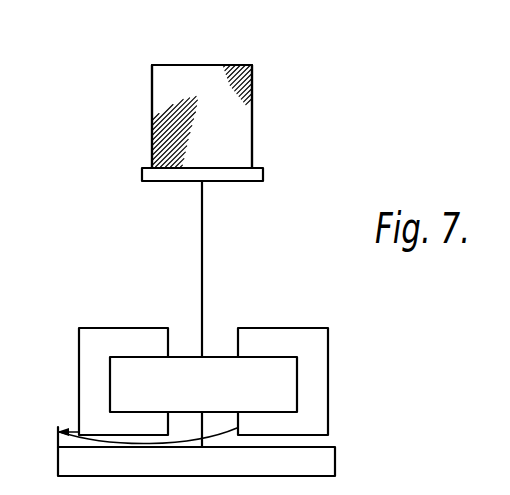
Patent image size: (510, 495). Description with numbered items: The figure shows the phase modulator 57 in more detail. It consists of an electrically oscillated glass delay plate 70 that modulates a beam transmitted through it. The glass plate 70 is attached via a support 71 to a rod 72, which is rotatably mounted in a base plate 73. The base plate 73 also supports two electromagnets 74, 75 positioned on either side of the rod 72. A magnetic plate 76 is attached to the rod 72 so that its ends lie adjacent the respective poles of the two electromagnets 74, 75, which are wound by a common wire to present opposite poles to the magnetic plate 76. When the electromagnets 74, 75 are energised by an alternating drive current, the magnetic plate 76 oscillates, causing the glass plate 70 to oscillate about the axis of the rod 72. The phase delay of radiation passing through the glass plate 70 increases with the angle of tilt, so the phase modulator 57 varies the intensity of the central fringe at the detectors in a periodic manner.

The phase modulator 57 is at (259, 82).
The glass delay plate 70 is at (203, 68).
The support 71 is at (264, 174).
The rod 72 is at (203, 258).
The base plate 73 is at (336, 465).
The electromagnet 74 is at (83, 378).
The electromagnet 75 is at (318, 372).
The magnetic plate 76 is at (283, 398).